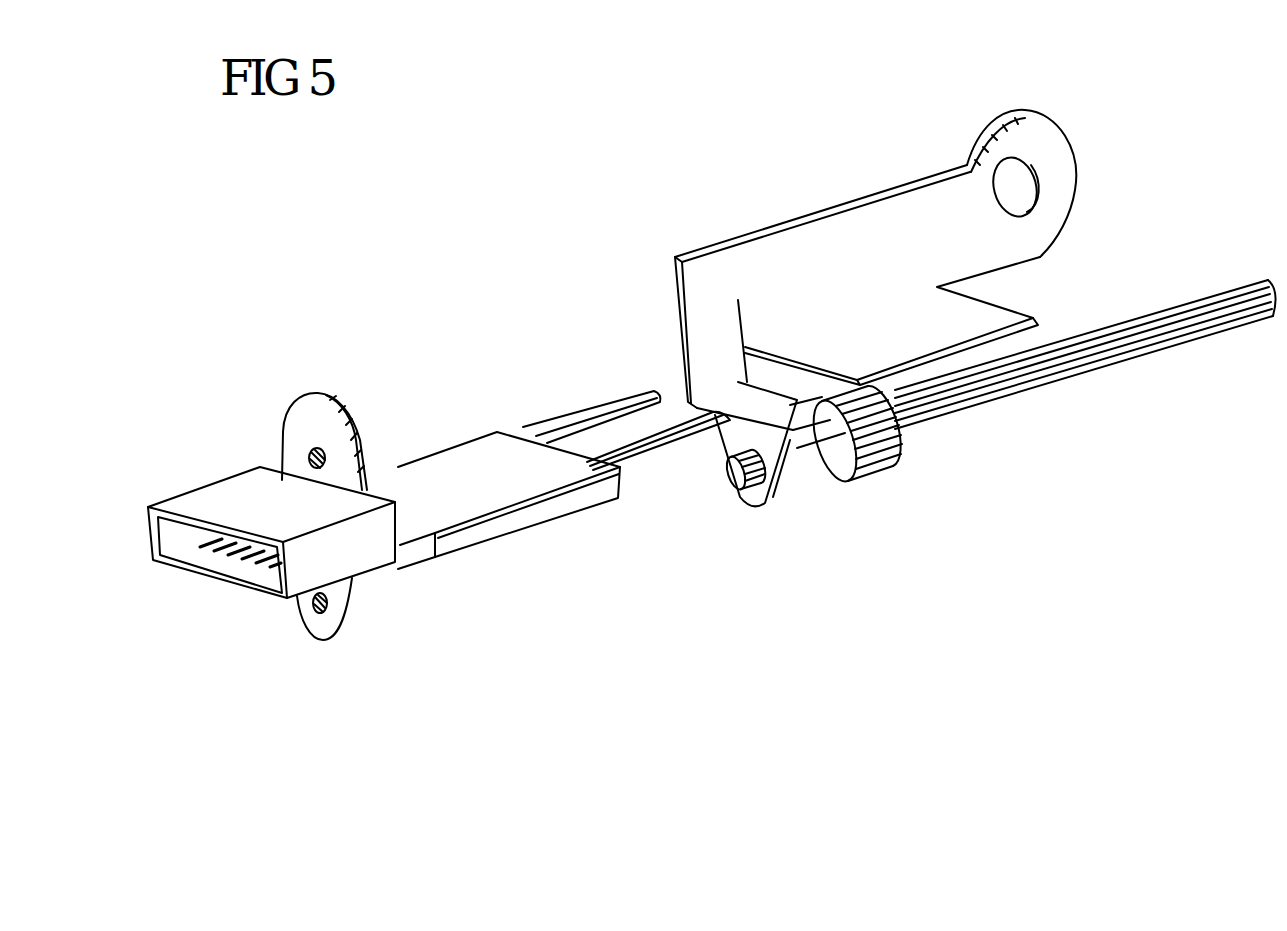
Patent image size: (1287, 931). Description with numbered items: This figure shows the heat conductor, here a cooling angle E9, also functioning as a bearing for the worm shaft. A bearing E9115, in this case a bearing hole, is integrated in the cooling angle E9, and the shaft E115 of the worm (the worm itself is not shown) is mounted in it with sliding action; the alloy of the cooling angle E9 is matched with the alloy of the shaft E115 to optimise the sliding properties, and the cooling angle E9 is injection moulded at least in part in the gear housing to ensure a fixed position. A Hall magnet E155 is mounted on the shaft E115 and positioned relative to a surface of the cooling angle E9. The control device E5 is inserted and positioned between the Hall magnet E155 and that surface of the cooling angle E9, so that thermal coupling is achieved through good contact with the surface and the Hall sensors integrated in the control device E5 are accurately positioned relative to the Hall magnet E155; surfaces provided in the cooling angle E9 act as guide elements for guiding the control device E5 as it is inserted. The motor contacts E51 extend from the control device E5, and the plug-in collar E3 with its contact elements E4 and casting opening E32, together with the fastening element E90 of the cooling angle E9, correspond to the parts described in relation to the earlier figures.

The plug-in collar E3 is at (256, 492).
The contact elements E4 is at (203, 546).
The casting opening E32 is at (318, 450).
The control device E5 is at (493, 487).
The motor contacts E51 is at (548, 426).
The cooling angle E9 is at (801, 256).
The fastening element E90 is at (1033, 198).
The bearing E9115 is at (743, 504).
The Hall magnet E155 is at (872, 456).
The shaft E115 is at (1037, 372).